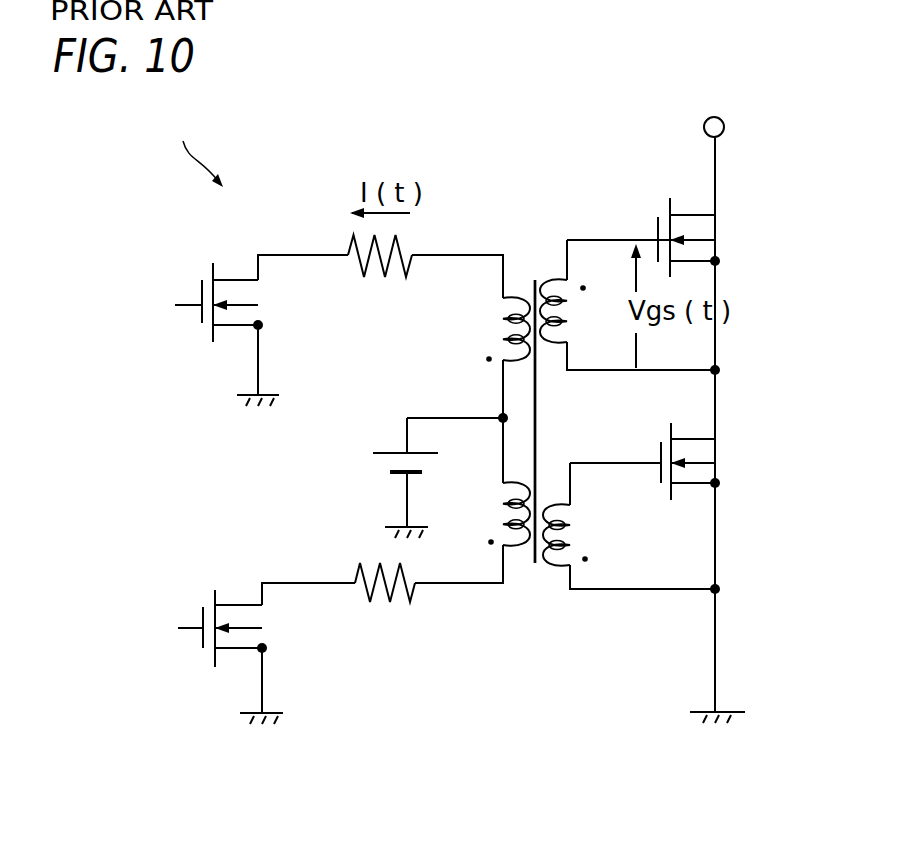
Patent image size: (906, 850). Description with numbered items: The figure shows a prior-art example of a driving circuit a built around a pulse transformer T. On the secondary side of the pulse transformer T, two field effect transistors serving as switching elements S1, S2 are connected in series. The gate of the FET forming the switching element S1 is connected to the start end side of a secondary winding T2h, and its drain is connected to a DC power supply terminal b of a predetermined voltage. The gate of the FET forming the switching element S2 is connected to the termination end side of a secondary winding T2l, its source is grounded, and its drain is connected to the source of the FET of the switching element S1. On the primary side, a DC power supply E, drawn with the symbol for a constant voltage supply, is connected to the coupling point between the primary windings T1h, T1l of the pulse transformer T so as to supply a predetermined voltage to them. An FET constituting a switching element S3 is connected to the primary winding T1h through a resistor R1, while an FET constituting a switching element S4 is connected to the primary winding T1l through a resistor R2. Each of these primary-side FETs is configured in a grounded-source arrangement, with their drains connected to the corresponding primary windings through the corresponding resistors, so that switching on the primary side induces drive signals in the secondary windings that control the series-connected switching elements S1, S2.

The driving circuit a is at (197, 150).
The DC power supply terminal b is at (722, 118).
The switching element S1 is at (707, 237).
The switching element S2 is at (708, 461).
The switching element S3 is at (213, 295).
The switching element S4 is at (215, 625).
The resistor R1 is at (380, 269).
The resistor R2 is at (385, 597).
The DC power supply E is at (405, 446).
The pulse transformer T is at (531, 243).
The primary winding T1h is at (494, 329).
The primary winding T1l is at (497, 513).
The secondary winding T2h is at (581, 310).
The secondary winding T2l is at (580, 535).